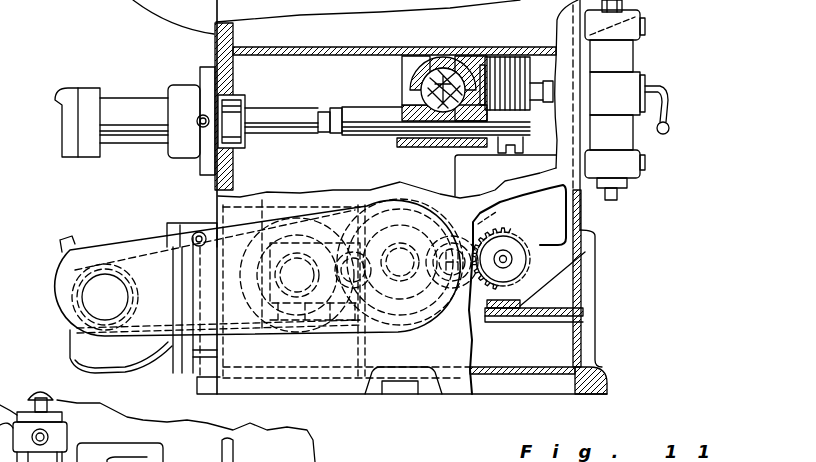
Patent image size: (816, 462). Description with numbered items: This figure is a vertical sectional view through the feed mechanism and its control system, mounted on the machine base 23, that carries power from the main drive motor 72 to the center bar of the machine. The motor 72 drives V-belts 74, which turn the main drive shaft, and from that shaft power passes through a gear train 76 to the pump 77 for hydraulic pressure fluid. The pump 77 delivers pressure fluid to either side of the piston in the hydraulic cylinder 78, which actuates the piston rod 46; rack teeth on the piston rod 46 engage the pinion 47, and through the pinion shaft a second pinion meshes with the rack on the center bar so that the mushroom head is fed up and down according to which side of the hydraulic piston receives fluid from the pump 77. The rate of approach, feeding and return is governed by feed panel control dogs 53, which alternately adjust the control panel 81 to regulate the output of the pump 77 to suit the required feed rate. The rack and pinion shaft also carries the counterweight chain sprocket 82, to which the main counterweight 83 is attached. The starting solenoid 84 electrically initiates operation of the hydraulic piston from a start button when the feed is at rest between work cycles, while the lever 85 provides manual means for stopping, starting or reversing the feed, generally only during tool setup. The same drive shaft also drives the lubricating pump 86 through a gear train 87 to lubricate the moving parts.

The machine base 23 is at (583, 217).
The piston rod 46 is at (375, 111).
The pinion 47 is at (416, 74).
The feed panel control dogs 53 is at (250, 430).
The main drive motor 72 is at (72, 233).
The V-belts 74 is at (137, 288).
The gear train 76 is at (400, 262).
The pump 77 is at (263, 200).
The hydraulic cylinder 78 is at (134, 110).
The control panel 81 is at (140, 461).
The counterweight chain sprocket 82 is at (523, 57).
The main counterweight 83 is at (460, 163).
The starting solenoid 84 is at (643, 30).
The lever 85 is at (668, 93).
The lubricating pump 86 is at (587, 281).
The gear train 87 is at (517, 232).